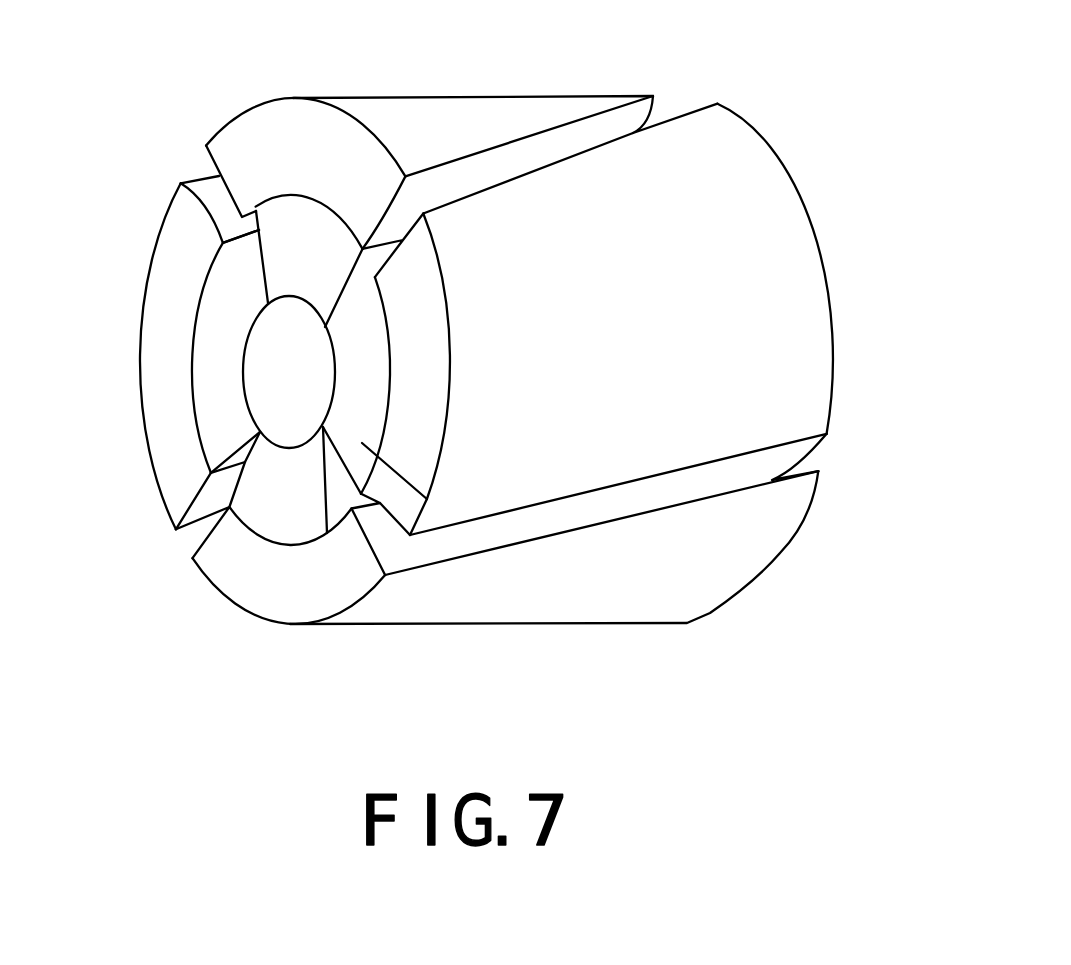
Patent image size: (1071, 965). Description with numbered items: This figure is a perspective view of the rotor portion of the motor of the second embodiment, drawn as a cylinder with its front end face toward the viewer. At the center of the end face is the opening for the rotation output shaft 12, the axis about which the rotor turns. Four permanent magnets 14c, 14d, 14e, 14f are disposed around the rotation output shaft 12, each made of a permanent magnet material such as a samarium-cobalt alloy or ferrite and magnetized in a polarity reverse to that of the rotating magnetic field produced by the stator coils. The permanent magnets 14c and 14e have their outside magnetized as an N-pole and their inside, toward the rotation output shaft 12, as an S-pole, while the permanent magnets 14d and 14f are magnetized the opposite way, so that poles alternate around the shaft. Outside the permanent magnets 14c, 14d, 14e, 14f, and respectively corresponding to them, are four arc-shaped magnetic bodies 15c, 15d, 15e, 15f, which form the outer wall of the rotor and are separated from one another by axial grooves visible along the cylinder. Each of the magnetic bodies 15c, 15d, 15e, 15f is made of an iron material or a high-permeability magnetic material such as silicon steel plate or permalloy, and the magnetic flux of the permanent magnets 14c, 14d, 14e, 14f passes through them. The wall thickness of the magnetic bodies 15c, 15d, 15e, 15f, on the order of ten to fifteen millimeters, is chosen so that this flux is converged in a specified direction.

The rotation output shaft 12 is at (256, 425).
The permanent magnet 14c is at (335, 240).
The permanent magnet 14d is at (426, 499).
The permanent magnet 14e is at (302, 522).
The permanent magnet 14f is at (210, 323).
The magnetic body 15c is at (311, 120).
The magnetic body 15d is at (418, 432).
The magnetic body 15e is at (255, 588).
The magnetic body 15f is at (157, 388).